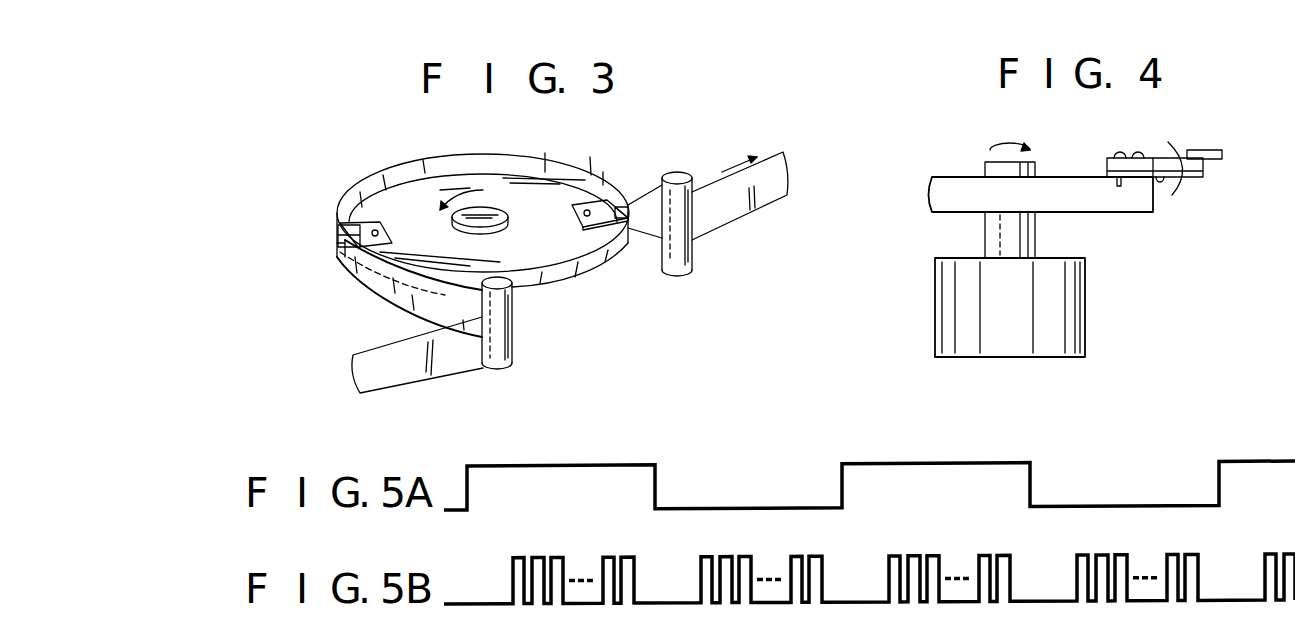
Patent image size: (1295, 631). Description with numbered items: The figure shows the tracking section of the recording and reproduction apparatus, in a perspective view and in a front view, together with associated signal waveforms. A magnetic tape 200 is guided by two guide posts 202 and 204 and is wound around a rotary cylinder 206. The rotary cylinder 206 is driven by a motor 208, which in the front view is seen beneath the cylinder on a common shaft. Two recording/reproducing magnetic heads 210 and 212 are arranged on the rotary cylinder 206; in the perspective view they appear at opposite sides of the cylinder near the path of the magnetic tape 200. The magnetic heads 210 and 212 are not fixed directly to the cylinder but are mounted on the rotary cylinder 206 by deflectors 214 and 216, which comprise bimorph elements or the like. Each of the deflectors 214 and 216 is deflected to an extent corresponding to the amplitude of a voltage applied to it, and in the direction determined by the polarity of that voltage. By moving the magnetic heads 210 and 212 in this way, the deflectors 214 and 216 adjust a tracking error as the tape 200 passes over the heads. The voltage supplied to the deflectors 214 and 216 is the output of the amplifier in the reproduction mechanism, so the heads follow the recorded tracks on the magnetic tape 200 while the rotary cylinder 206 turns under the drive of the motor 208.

In FIG. 3, the magnetic tape 200 is at (458, 368).
In FIG. 3, the guide post 202 is at (513, 352).
In FIG. 3, the guide post 204 is at (672, 276).
In FIG. 3, the rotary cylinder 206 is at (511, 187).
In FIG. 4, the rotary cylinder 206 is at (1097, 200).
In FIG. 4, the motor 208 is at (1086, 348).
In FIG. 3, the recording/reproducing magnetic head 210 is at (624, 203).
In FIG. 4, the recording/reproducing magnetic head 210 is at (1203, 150).
In FIG. 3, the recording/reproducing magnetic head 212 is at (337, 242).
In FIG. 3, the deflector 214 is at (580, 224).
In FIG. 4, the deflector 214 is at (1212, 178).
In FIG. 3, the deflector 216 is at (342, 224).